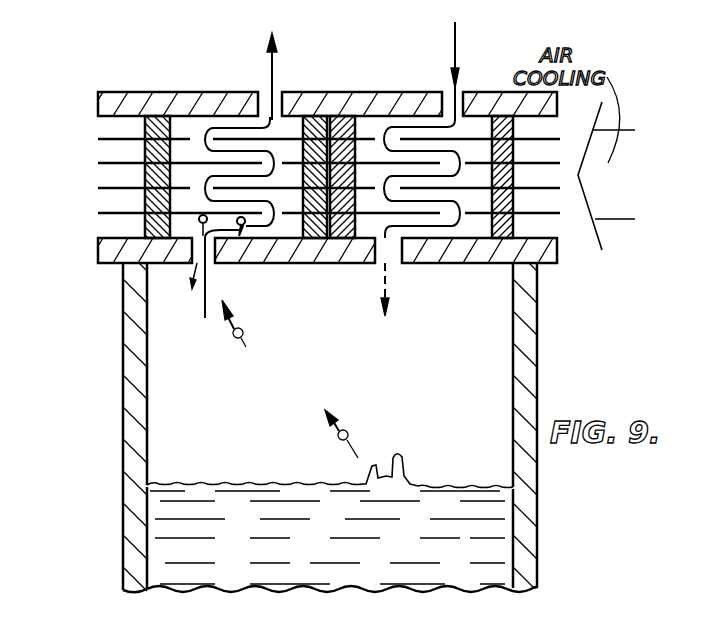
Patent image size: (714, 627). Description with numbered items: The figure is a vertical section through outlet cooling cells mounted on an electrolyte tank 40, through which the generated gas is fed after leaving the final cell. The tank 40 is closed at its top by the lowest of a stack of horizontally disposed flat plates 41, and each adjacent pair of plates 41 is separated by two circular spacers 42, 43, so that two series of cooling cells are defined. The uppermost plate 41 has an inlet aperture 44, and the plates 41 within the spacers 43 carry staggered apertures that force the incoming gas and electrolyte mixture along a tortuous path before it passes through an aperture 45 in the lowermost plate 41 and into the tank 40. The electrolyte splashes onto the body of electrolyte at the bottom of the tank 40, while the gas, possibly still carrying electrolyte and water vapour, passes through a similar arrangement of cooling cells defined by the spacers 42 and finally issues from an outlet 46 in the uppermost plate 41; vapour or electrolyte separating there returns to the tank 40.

The tank 40 is at (530, 342).
The flat plates 41 is at (100, 163).
The spacers 42 is at (317, 118).
The spacers 43 is at (347, 118).
The inlet aperture 44 is at (462, 87).
The aperture 45 is at (391, 265).
The outlet 46 is at (266, 86).